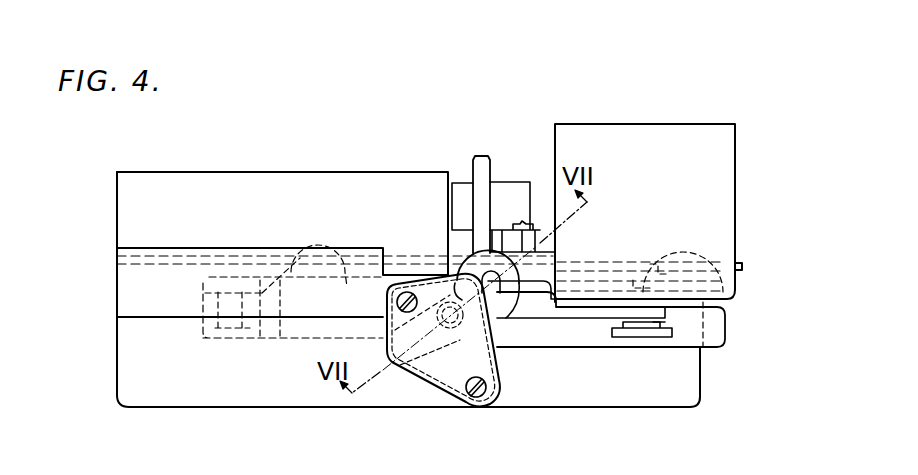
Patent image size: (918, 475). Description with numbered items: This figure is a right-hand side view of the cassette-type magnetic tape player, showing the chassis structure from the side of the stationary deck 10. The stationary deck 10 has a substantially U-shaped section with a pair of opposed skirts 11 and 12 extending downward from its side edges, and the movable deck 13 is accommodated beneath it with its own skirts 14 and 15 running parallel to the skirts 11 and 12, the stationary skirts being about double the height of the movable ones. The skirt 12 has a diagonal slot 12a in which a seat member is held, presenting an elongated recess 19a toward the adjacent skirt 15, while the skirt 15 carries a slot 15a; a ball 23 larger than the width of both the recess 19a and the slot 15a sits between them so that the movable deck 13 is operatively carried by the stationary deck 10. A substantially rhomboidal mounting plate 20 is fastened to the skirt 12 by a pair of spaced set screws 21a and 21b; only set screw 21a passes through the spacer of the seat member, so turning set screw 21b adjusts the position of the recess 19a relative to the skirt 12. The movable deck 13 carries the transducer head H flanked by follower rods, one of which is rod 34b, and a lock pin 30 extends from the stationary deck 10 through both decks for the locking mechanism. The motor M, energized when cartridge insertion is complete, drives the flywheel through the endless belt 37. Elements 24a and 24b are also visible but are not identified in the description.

The cover plate 24b is at (282, 192).
The cover plate 24a is at (247, 186).
The stationary deck 10 is at (360, 282).
The set screw 21b is at (399, 283).
The ball 23 is at (442, 300).
The follower rod 34b is at (482, 156).
The transducer head H is at (513, 182).
The motor M is at (716, 178).
The lock pin 30 is at (258, 338).
The elongated recess 19a is at (380, 370).
The slot 12a is at (427, 340).
The set screw 21a is at (478, 398).
The mounting plate 20 is at (500, 314).
The slot 15a is at (486, 318).
The movable deck 13 is at (583, 303).
The endless belt 37 is at (604, 314).
The skirt 15 is at (656, 339).
The skirt 14 is at (720, 323).
The skirt 12 is at (469, 305).
The skirt 11 is at (690, 382).